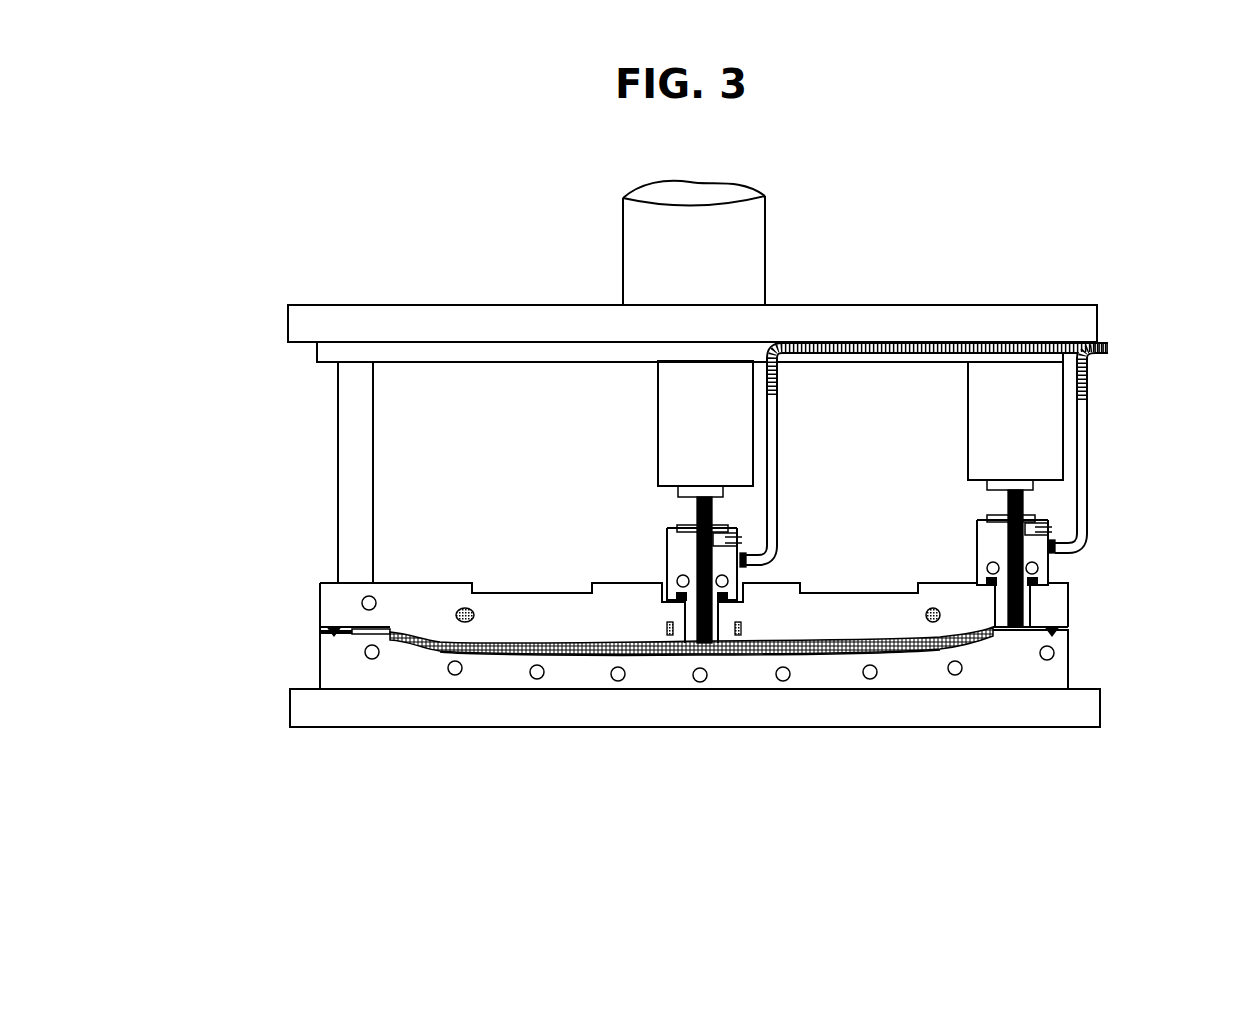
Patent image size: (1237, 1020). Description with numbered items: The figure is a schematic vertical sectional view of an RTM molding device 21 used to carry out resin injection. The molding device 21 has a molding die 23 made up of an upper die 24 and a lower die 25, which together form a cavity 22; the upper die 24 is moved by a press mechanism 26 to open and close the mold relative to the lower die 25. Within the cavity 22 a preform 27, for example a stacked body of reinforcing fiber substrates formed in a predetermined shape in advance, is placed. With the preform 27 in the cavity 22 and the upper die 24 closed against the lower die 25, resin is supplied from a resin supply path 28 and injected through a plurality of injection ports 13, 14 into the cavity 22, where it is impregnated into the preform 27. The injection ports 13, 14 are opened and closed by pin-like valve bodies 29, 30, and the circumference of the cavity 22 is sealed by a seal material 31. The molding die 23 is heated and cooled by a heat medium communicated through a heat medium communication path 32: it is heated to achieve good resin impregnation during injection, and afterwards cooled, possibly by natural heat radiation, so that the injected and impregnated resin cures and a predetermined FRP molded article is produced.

The molding device 21 is at (998, 259).
The press mechanism 26 is at (676, 270).
The resin supply path 28 is at (1083, 367).
The pin-like valve body 29 is at (700, 570).
The pin-like valve body 30 is at (1040, 562).
The injection port 13 is at (708, 652).
The injection port 14 is at (1015, 628).
The molding die 23 is at (625, 644).
The upper die 24 is at (338, 605).
The lower die 25 is at (338, 659).
The cavity 22 is at (553, 653).
The preform 27 is at (525, 650).
The seal material 31 is at (1057, 633).
The heat medium communication path 32 is at (460, 622).